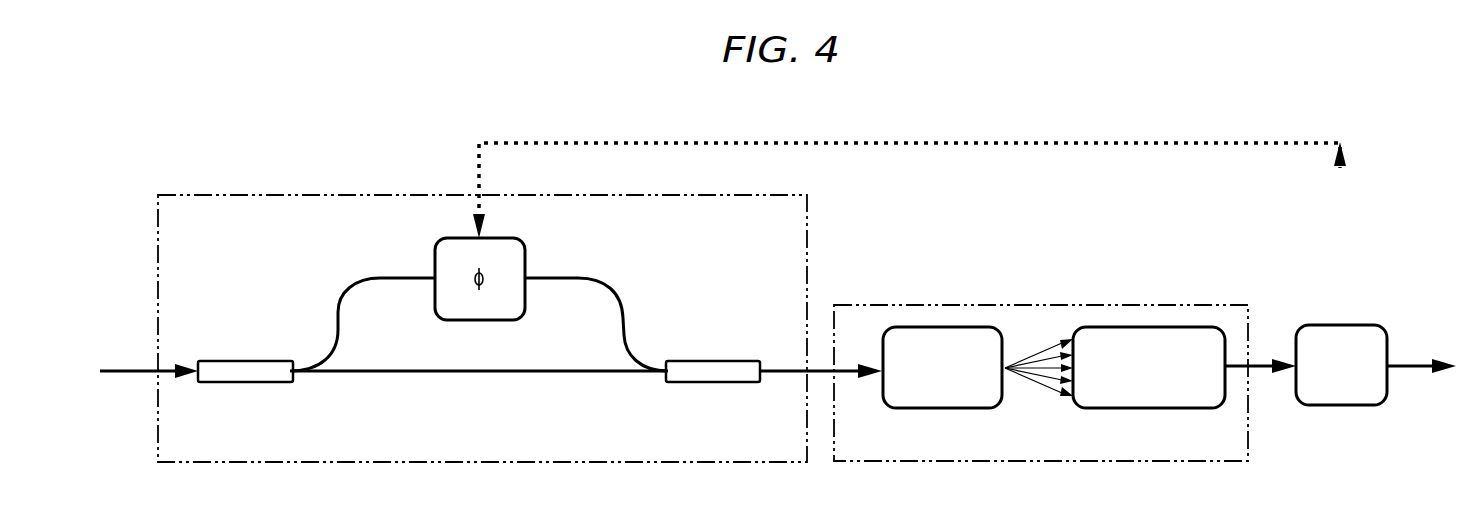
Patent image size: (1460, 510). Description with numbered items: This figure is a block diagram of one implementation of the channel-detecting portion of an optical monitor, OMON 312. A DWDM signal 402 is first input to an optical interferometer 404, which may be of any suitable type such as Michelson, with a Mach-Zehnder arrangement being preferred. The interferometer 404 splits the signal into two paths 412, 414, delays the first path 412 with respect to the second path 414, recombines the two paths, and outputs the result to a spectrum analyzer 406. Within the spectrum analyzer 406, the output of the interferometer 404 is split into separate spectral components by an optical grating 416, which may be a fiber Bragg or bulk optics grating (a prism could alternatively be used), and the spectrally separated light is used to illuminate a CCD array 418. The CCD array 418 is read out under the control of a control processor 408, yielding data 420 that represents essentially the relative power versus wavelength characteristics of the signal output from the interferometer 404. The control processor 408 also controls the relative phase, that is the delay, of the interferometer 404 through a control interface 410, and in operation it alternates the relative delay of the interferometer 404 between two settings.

The optical monitor (OMON) 312 is at (992, 110).
The DWDM signal 402 is at (112, 369).
The interferometer 404 is at (308, 195).
The spectrum analyzer 406 is at (1032, 305).
The control processor 408 is at (1350, 325).
The control interface 410 is at (612, 143).
The first path 412 is at (337, 308).
The second path 414 is at (430, 374).
The grating 416 is at (945, 409).
The CCD array 418 is at (1150, 409).
The data 420 is at (1410, 370).